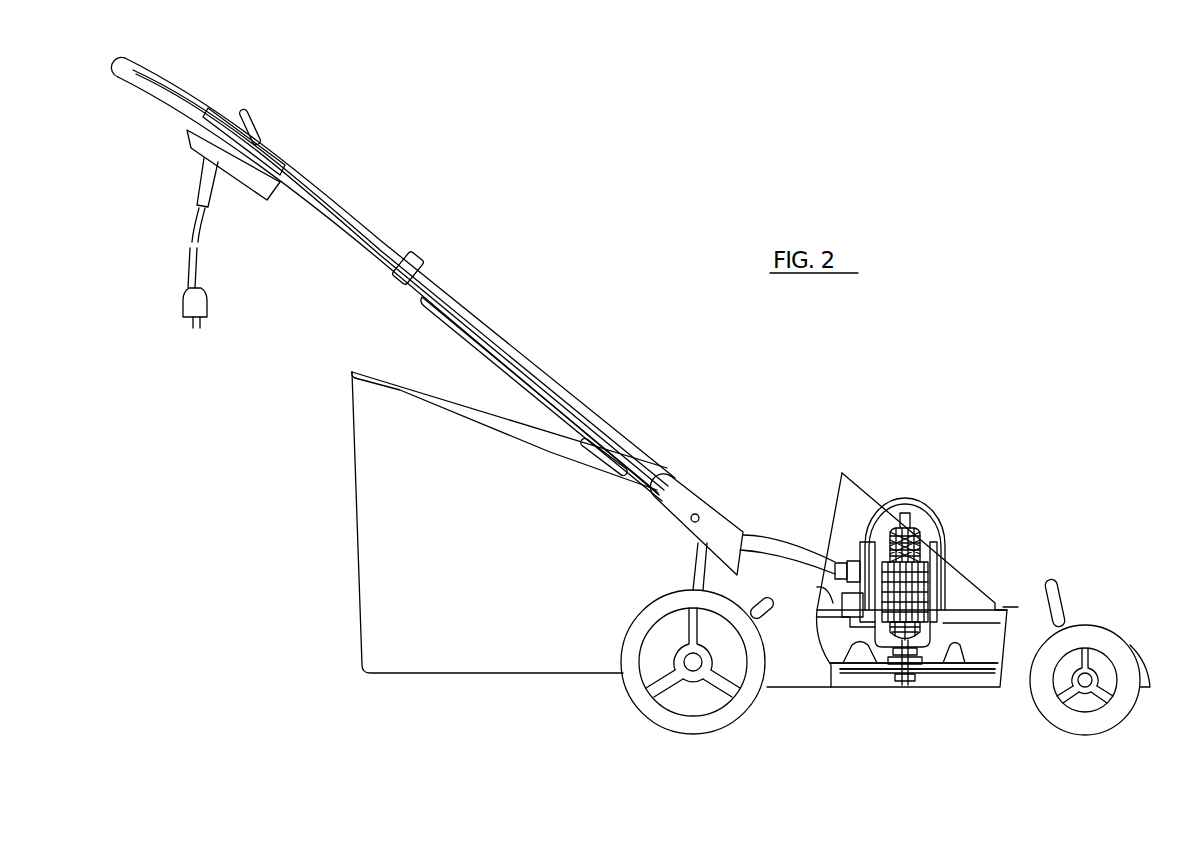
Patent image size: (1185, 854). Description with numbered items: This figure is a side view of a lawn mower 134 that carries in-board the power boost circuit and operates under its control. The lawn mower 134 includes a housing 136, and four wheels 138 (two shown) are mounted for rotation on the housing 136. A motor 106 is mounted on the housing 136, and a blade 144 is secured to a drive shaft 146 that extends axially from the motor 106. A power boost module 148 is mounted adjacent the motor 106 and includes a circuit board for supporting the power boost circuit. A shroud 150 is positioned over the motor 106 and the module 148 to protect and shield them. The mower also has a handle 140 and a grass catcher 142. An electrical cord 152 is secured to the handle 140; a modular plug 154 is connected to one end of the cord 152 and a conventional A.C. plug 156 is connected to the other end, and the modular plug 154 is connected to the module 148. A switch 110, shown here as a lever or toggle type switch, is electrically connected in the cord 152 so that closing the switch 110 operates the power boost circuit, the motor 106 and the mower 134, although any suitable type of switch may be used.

The motor 106 is at (918, 580).
The switch 110 is at (257, 128).
The lawn mower 134 is at (968, 412).
The housing 136 is at (1018, 607).
The wheels 138 is at (645, 700).
The handle 140 is at (487, 347).
The grass catcher 142 is at (470, 640).
The blade 144 is at (863, 673).
The drive shaft 146 is at (918, 650).
The power boost module 148 is at (857, 548).
The shroud 150 is at (883, 485).
The electrical cord 152 is at (380, 228).
The modular plug 154 is at (830, 548).
The A.C. plug 156 is at (203, 308).